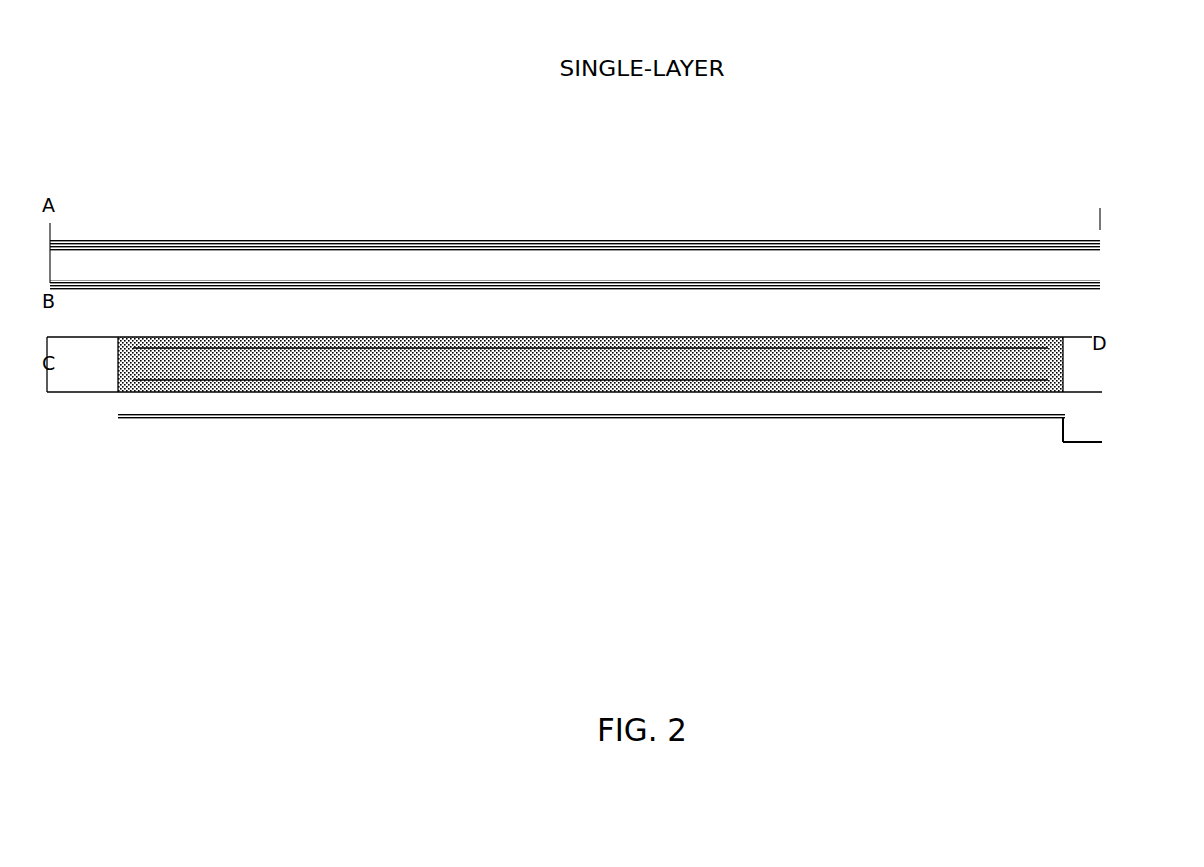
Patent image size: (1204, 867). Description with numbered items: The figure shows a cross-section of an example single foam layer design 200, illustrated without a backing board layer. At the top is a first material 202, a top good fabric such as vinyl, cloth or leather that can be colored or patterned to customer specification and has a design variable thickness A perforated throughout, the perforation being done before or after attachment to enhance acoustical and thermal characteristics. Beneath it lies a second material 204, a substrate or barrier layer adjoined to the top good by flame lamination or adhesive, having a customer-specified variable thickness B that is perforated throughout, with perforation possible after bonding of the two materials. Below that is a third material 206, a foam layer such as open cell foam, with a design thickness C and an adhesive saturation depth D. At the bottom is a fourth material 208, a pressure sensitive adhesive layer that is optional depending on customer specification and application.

The single foam layer design 200 is at (972, 42).
The first material 202 is at (1100, 245).
The second material 204 is at (1100, 286).
The third material 206 is at (1102, 392).
The fourth material 208 is at (1102, 442).